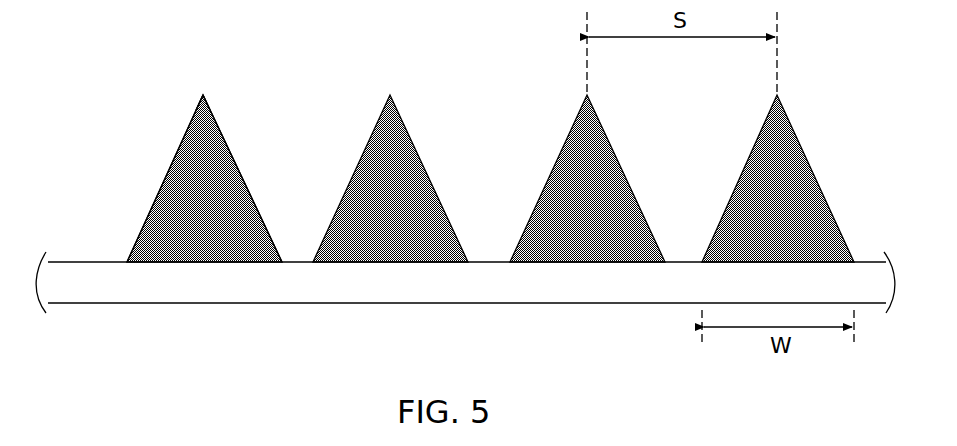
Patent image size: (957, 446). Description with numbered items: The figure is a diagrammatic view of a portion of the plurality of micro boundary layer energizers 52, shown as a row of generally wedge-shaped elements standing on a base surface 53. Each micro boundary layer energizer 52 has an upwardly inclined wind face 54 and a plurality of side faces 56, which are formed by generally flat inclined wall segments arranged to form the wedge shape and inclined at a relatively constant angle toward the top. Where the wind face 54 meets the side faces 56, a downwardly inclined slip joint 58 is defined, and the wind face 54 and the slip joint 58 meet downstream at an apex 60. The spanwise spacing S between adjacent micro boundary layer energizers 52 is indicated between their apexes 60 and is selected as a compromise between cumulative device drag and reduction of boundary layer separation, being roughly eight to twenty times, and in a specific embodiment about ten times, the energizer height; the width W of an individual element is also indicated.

The micro boundary layer energizer 52 is at (610, 138).
The substrate 53 is at (402, 266).
The wind face 54 is at (172, 158).
The side faces 56 is at (230, 147).
The slip joint 58 is at (205, 93).
The apex 60 is at (390, 93).